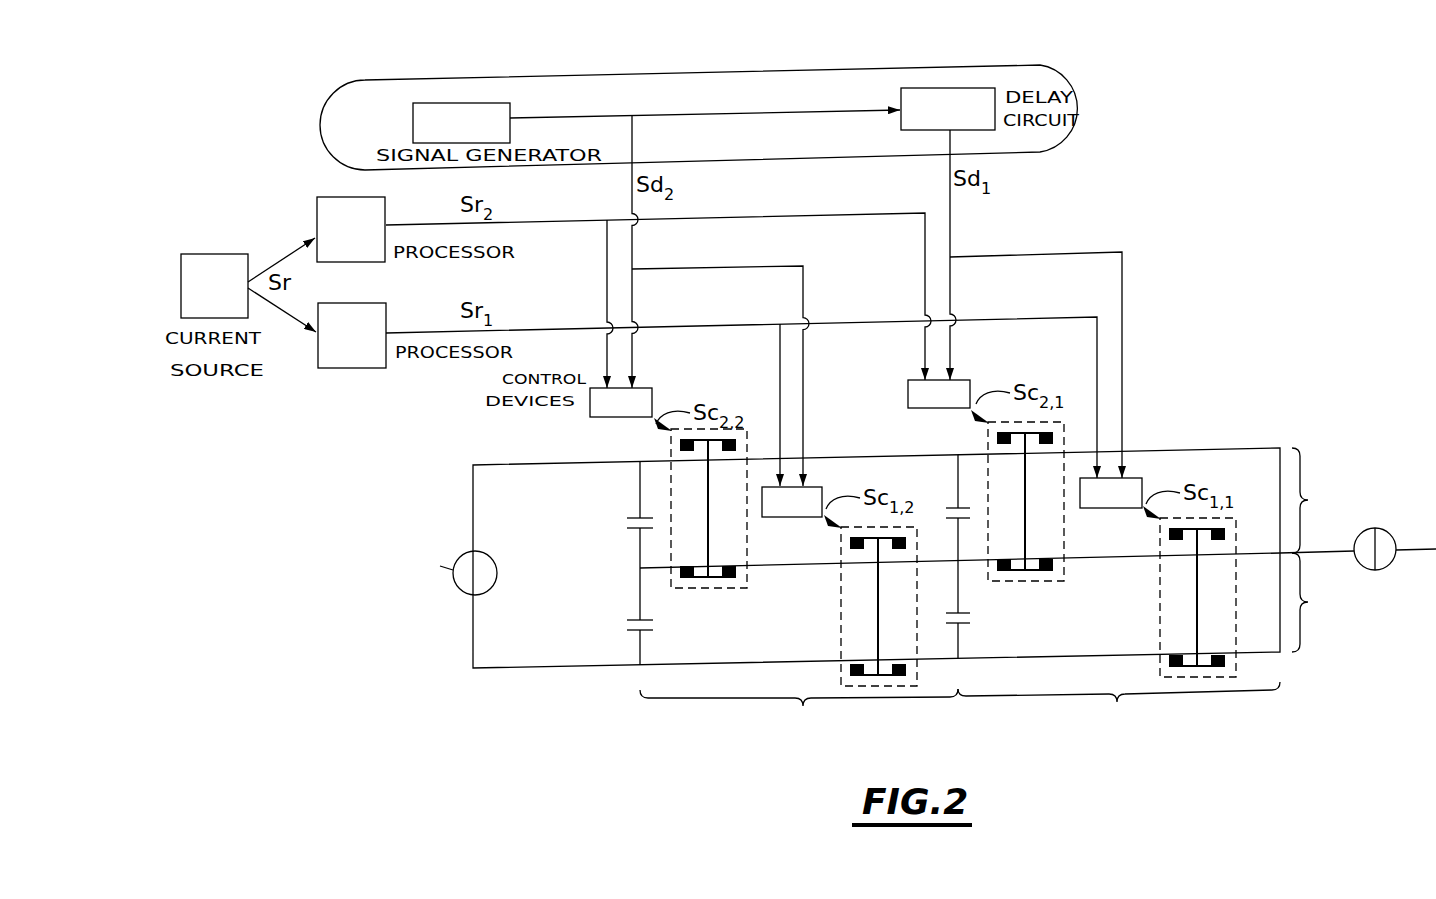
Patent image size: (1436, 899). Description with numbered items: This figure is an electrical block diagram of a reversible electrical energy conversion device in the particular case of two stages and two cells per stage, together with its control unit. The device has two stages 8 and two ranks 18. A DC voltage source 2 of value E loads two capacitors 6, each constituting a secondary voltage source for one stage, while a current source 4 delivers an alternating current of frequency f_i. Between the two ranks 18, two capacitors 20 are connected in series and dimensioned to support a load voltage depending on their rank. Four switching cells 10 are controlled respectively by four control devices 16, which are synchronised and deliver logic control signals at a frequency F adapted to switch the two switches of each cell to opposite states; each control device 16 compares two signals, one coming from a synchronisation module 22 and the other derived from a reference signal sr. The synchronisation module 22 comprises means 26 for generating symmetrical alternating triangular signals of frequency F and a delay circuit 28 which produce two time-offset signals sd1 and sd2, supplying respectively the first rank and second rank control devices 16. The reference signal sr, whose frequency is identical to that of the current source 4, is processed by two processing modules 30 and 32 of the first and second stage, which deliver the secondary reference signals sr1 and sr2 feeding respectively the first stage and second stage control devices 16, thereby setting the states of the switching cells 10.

The DC voltage source 2 is at (447, 572).
The current source 4 is at (205, 287).
The capacitors 6 is at (627, 523).
The stages 8 is at (1313, 495).
The switching cells 10 is at (669, 438).
The control devices 16 is at (652, 402).
The ranks 18 is at (960, 714).
The capacitors 20 is at (943, 508).
The synchronisation module 22 is at (632, 72).
The means for generating symmetrical alternating triangular signals 26 is at (469, 102).
The delay circuit 28 is at (936, 88).
The processing module 30 is at (362, 352).
The processing module 32 is at (343, 214).